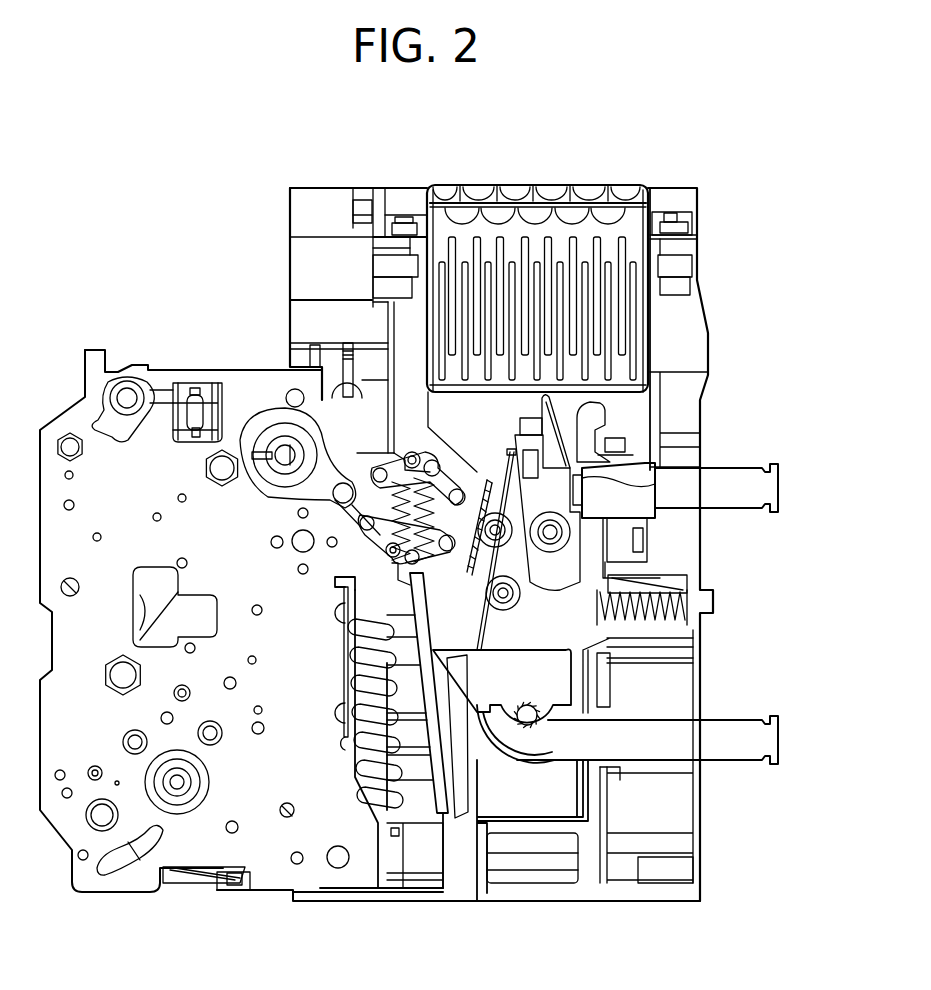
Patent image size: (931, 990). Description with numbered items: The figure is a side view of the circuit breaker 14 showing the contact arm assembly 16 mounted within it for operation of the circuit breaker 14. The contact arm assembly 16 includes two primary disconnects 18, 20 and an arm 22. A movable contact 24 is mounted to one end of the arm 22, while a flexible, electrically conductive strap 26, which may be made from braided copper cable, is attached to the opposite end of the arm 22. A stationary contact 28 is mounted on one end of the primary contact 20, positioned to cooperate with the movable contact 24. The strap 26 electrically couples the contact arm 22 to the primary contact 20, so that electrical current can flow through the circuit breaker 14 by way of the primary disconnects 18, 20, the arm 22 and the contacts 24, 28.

The circuit breaker 14 is at (226, 181).
The contact arm assembly 16 is at (587, 540).
The primary disconnect 18 is at (737, 760).
The primary disconnect 20 is at (780, 488).
The arm 22 is at (530, 492).
The movable contact 24 is at (578, 478).
The flexible electrically conductive strap 26 is at (557, 560).
The stationary contact 28 is at (587, 500).